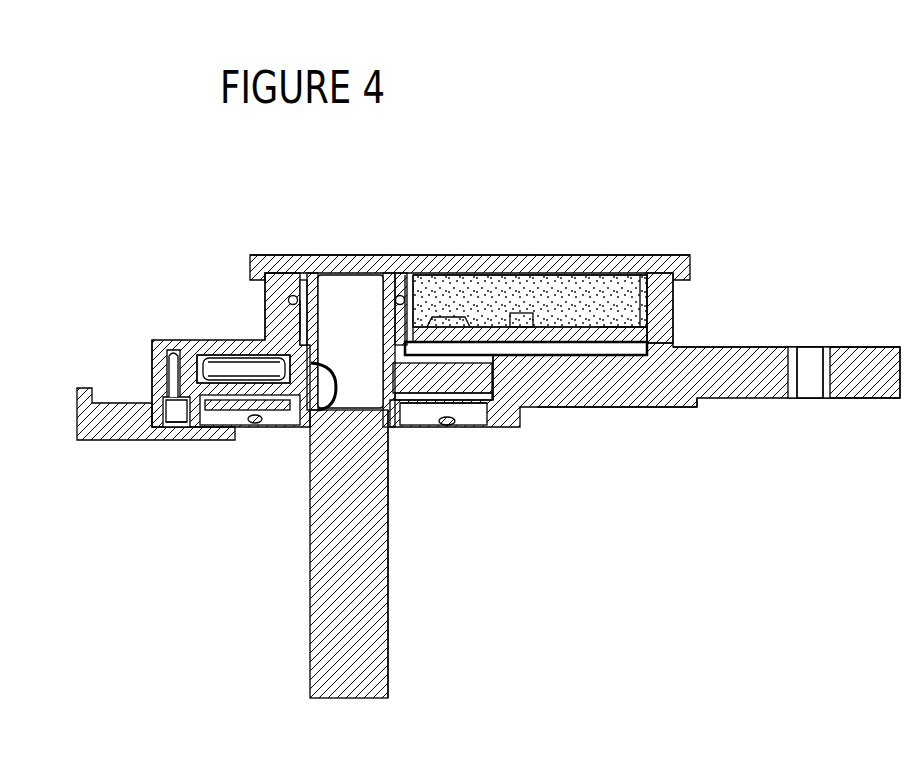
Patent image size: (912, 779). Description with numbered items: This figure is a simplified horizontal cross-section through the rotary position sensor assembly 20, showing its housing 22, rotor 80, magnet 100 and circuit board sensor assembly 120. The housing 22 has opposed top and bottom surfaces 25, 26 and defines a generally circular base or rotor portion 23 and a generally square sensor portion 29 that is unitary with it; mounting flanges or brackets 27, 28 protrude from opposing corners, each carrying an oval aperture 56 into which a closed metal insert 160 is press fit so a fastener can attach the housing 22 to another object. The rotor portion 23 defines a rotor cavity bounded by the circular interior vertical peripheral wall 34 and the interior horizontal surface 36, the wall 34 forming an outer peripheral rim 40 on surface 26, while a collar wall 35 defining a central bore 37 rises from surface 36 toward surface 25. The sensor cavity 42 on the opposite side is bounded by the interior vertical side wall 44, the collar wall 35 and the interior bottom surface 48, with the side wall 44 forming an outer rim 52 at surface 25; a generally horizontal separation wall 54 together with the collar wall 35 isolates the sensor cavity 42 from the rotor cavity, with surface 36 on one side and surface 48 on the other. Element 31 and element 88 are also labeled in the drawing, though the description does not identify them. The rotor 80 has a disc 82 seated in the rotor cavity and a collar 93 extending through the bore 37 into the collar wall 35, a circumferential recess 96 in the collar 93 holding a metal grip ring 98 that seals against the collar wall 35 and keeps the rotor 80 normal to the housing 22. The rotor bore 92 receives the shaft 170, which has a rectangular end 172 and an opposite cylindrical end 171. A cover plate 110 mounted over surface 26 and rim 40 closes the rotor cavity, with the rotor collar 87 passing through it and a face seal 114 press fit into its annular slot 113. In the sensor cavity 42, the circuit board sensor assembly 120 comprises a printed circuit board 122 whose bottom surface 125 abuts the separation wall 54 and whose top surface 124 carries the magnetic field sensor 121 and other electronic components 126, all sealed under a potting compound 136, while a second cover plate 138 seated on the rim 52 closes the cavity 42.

The rotary position sensor assembly 20 is at (645, 99).
The housing 22 is at (588, 410).
The base or rotor portion 23 is at (150, 372).
The top surface 25 is at (213, 350).
The bottom surface 26 is at (643, 407).
The mounting flange or bracket 27 is at (872, 398).
The mounting flange or bracket 28 is at (128, 440).
The sensor portion 29 is at (680, 302).
The cap 31 is at (453, 241).
The interior vertical peripheral wall 34 is at (225, 425).
The collar and cylindrical wall 35 is at (405, 290).
The interior horizontal wall or surface 36 is at (228, 355).
The central bore or through-hole 37 is at (393, 282).
The outer peripheral circumferential rim 40 is at (185, 440).
The sensor or electronics cavity 42 is at (524, 298).
The interior vertical side wall 44 is at (628, 290).
The interior bottom wall or surface 48 is at (612, 270).
The circumferential outer rim 52 is at (665, 285).
The separation wall 54 is at (478, 327).
The oval-shaped apertures or through-holes 56 is at (806, 362).
The rotor 80 is at (295, 300).
The disc 82 is at (210, 353).
The collar 87 is at (275, 430).
The o-ring 88 is at (437, 430).
The bore 92 is at (322, 405).
The collar 93 is at (305, 272).
The circumferential recess 96 is at (298, 318).
The metal grip ring 98 is at (289, 296).
The magnet 100 is at (470, 403).
The cover plate 110 is at (400, 432).
The annular slot or recess 113 is at (252, 418).
The ring or face seal 114 is at (415, 425).
The circuit board sensor assembly 120 is at (584, 319).
The sensor 121 is at (452, 275).
The printed circuit board 122 is at (560, 340).
The top surface 124 is at (545, 300).
The bottom surface 125 is at (555, 345).
The other electronic components 126 is at (512, 357).
The potting compound 136 is at (625, 315).
The cover plate 138 is at (640, 300).
The oval-shaped closed metal inserts 160 is at (800, 398).
The shaft 170 is at (390, 556).
The cylindrically-shaped end 171 is at (388, 658).
The rectangularly-shaped end 172 is at (350, 297).